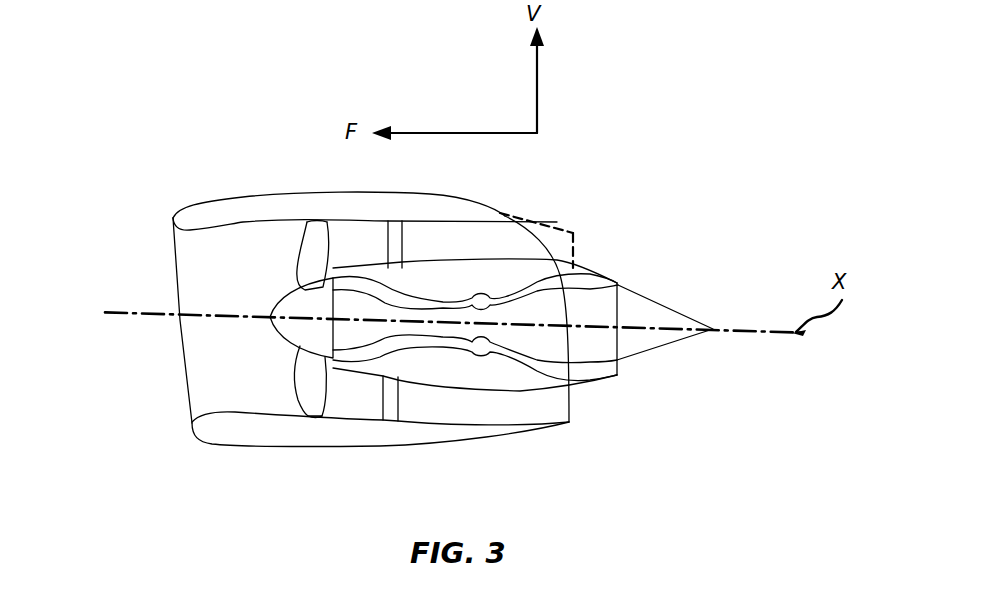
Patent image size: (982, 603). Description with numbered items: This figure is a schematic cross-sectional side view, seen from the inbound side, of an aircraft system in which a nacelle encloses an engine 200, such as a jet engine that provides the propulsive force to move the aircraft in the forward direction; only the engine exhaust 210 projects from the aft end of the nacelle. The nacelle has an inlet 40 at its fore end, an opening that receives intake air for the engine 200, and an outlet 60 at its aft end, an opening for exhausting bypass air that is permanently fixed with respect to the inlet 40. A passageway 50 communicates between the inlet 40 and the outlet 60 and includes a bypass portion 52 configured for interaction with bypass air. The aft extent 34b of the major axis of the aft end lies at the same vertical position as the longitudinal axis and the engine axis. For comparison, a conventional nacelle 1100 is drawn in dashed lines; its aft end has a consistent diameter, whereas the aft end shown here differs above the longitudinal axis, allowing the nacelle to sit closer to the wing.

The inlet 40 is at (166, 262).
The passageway 50 is at (283, 400).
The bypass portion 52 is at (470, 417).
The engine 200 is at (250, 340).
The aft extent of the major axis 34b is at (570, 333).
The engine exhaust 210 is at (653, 311).
The conventional nacelle 1100 is at (560, 218).
The outlet 60 is at (566, 250).